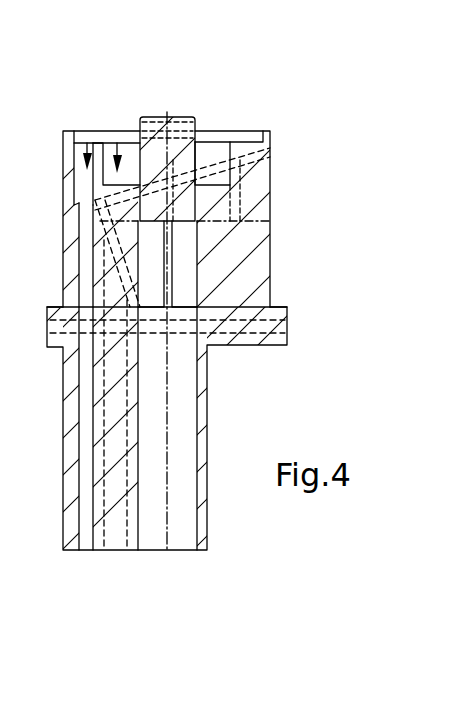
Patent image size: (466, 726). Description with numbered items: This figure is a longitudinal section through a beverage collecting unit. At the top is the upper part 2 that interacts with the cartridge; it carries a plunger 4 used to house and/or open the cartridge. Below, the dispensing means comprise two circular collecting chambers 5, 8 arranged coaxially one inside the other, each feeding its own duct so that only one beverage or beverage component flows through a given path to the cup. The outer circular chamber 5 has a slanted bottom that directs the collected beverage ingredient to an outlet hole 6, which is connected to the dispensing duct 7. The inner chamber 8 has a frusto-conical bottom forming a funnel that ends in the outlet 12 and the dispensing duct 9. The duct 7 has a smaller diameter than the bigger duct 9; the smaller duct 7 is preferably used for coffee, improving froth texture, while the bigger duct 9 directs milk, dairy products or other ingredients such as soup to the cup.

The upper part 2 is at (283, 218).
The plunger 4 is at (198, 122).
The outer circular collecting chamber 5 is at (89, 142).
The outlet hole 6 is at (80, 203).
The dispensing duct 7 is at (85, 433).
The collecting chamber 8 is at (122, 142).
The dispensing duct 9 is at (167, 417).
The outlet 12 is at (184, 307).